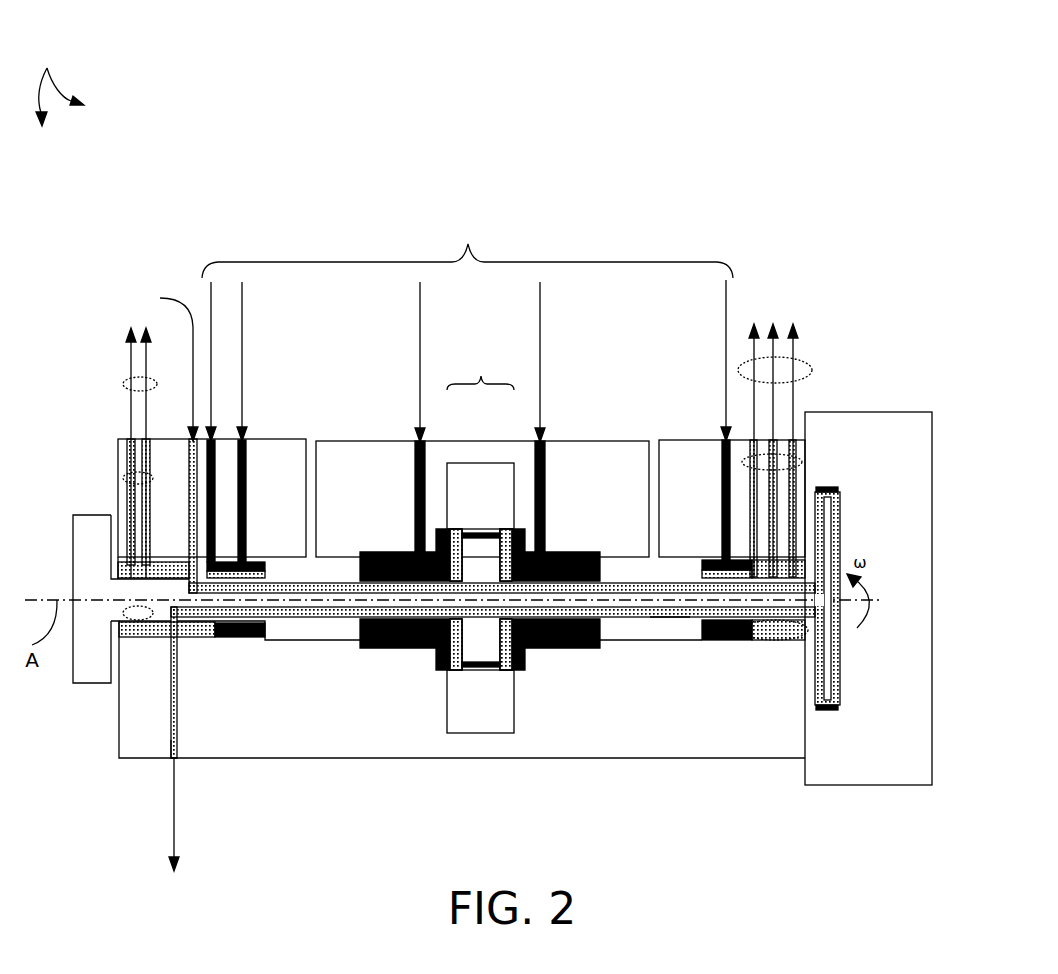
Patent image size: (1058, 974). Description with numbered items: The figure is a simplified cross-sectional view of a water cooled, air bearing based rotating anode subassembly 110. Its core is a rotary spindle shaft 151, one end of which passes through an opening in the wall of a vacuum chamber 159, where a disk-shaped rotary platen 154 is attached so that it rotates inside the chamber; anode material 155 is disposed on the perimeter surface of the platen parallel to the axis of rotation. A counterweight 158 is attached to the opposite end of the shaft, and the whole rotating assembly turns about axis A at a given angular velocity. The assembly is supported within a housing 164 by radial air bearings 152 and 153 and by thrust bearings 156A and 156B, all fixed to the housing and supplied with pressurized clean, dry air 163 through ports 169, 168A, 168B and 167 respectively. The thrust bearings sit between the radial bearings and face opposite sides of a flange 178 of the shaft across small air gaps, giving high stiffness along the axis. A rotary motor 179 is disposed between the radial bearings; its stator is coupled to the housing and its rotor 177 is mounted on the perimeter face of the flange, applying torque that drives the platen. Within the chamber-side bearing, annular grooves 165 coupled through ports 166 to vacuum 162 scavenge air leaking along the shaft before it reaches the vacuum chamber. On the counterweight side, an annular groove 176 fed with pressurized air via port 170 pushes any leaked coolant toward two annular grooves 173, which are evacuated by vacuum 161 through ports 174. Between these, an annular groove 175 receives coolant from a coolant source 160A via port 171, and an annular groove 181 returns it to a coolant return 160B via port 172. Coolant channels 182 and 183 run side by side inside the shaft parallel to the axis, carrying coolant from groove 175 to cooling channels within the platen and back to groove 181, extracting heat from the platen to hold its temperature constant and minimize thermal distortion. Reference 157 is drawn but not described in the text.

The rotating anode subassembly 110 is at (55, 84).
The rotary spindle shaft 151 is at (304, 598).
The radial air bearing 152 is at (240, 641).
The radial air bearing 153 is at (715, 641).
The rotary platen 154 is at (842, 521).
The anode material 155 is at (825, 711).
The thrust bearing 156A is at (575, 651).
The thrust bearing 156B is at (391, 651).
The upper center cavity 157 is at (477, 488).
The counterweight 158 is at (92, 684).
The vacuum chamber 159 is at (847, 778).
The coolant source 160A is at (153, 346).
The coolant return 160B is at (172, 827).
The vacuum 161 is at (120, 383).
The vacuum 162 is at (815, 370).
The pressurized clean, dry air 163 is at (467, 352).
The housing 164 is at (458, 642).
The annular grooves 165 is at (772, 643).
The ports 166 is at (800, 462).
The port 167 is at (722, 537).
The port 168A is at (547, 524).
The port 168B is at (414, 524).
The port 169 is at (248, 557).
The port 170 is at (199, 492).
The port 171 is at (219, 472).
The port 172 is at (178, 743).
The annular grooves 173 is at (138, 637).
The ports 174 is at (123, 478).
The annular groove 175 is at (198, 637).
The annular groove 176 is at (215, 637).
The rotor 177 is at (482, 531).
The flange 178 is at (483, 658).
The rotary motor 179 is at (472, 585).
The annular groove 181 is at (176, 560).
The coolant channel 182 is at (620, 594).
The coolant channel 183 is at (670, 618).